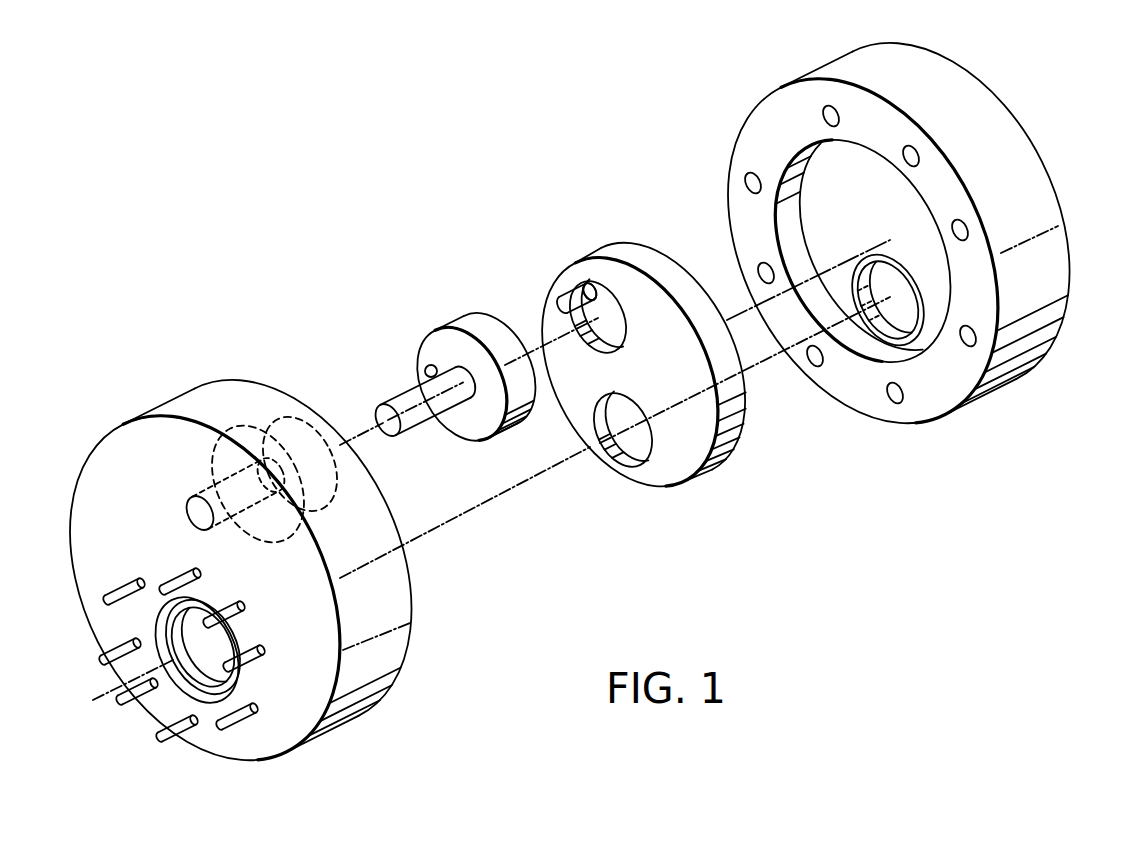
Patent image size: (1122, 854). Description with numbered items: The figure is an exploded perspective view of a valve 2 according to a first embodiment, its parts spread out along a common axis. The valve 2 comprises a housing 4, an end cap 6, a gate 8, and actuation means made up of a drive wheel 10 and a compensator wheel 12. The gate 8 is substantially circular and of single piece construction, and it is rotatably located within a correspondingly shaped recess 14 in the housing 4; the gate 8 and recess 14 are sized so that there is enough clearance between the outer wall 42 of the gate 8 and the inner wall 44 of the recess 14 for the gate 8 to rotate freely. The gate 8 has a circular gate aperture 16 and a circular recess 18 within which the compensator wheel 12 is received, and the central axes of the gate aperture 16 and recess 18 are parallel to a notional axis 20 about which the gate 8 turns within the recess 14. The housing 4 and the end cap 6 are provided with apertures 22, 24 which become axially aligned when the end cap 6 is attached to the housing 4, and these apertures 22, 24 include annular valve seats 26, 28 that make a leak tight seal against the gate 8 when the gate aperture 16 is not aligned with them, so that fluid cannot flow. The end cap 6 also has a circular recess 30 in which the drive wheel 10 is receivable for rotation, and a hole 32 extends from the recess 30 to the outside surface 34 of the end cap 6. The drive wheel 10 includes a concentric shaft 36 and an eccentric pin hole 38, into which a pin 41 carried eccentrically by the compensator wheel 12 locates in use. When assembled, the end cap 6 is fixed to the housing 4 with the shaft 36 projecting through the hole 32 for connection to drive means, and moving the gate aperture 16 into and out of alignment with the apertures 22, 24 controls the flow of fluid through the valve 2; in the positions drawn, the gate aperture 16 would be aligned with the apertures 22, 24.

The valve 2 is at (480, 210).
The housing 4 is at (855, 70).
The end cap 6 is at (215, 395).
The gate 8 is at (686, 455).
The drive wheel 10 is at (490, 423).
The compensator wheel 12 is at (580, 296).
The recess 14 is at (790, 170).
The gate aperture 16 is at (620, 447).
The recess 18 is at (600, 282).
The notional axis 20 is at (740, 262).
The aperture 22 is at (893, 277).
The aperture 24 is at (200, 687).
The annular valve seat 26 is at (880, 333).
The annular valve seat 28 is at (170, 673).
The circular recess 30 is at (298, 400).
The hole 32 is at (195, 515).
The outside surface 34 is at (293, 713).
The concentric shaft 36 is at (405, 410).
The eccentric pin hole 38 is at (428, 365).
The pin 41 is at (563, 305).
The outer wall 42 is at (650, 232).
The inner wall 44 is at (907, 360).